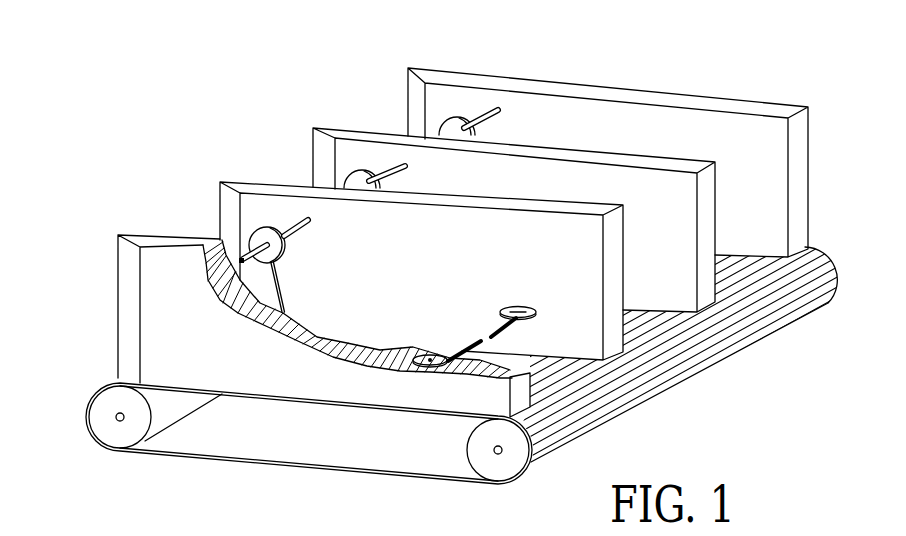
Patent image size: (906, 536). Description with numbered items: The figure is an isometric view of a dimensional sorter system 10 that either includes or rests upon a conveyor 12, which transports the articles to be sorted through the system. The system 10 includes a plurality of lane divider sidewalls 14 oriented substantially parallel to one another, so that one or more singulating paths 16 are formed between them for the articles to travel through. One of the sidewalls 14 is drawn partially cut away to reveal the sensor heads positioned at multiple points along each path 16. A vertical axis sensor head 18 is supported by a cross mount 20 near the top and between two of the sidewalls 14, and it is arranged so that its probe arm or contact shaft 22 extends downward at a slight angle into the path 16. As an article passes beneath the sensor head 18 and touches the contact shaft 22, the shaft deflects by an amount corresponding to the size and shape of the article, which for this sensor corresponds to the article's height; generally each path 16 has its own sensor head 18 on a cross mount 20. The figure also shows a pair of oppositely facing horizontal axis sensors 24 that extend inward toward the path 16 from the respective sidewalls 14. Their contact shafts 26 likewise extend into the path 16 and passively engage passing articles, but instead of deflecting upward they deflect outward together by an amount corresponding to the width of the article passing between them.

The dimensional sorter system 10 is at (262, 80).
The conveyor 12 is at (93, 418).
The lane divider sidewall 14 is at (762, 103).
The path 16 is at (643, 190).
The sensor head 18 is at (253, 230).
The cross mount 20 is at (292, 214).
The contact shaft 22 is at (281, 292).
The horizontal axis sensor 24 is at (423, 357).
The contact shaft 26 is at (493, 333).